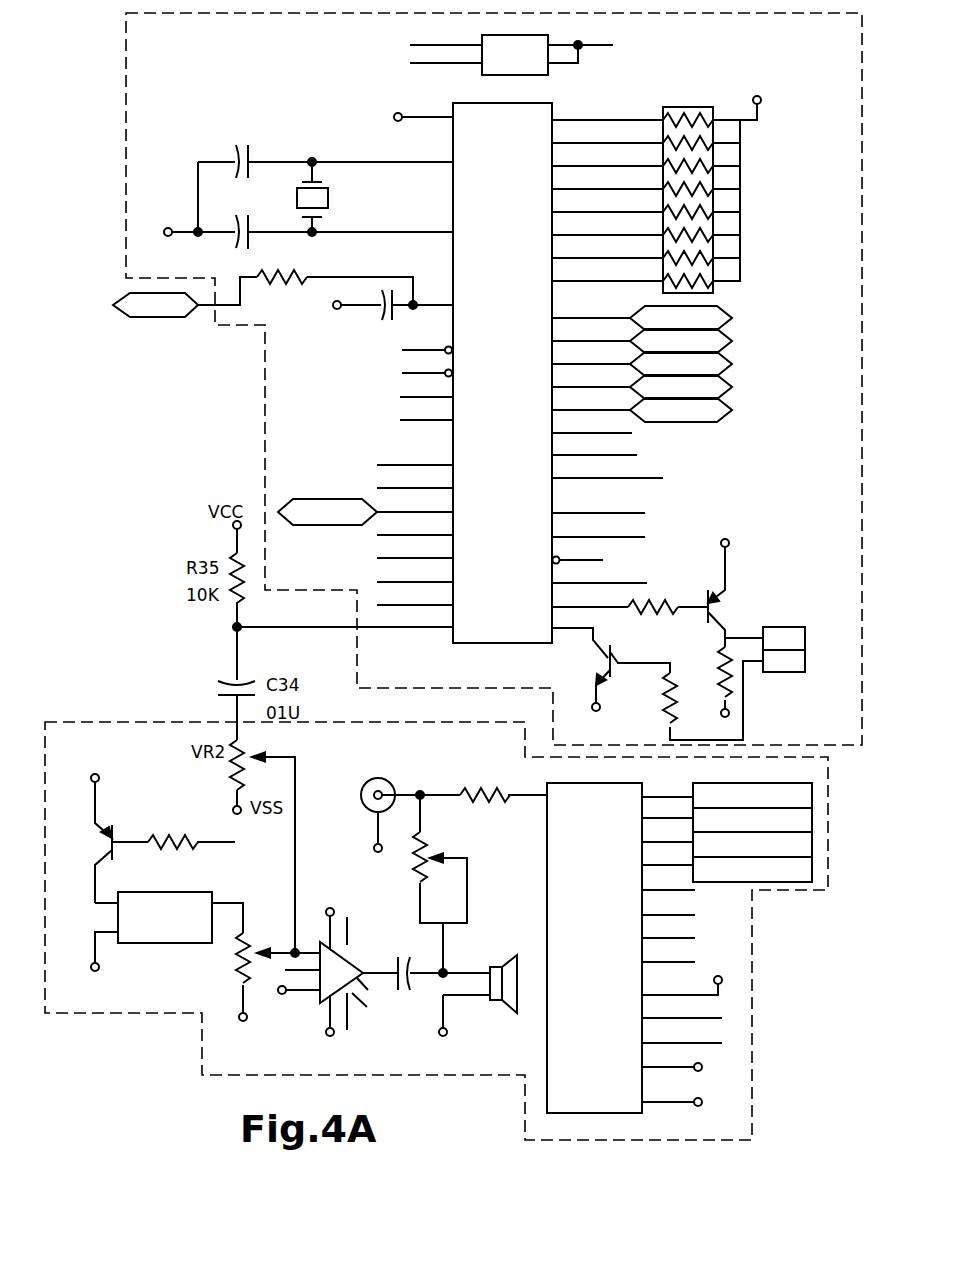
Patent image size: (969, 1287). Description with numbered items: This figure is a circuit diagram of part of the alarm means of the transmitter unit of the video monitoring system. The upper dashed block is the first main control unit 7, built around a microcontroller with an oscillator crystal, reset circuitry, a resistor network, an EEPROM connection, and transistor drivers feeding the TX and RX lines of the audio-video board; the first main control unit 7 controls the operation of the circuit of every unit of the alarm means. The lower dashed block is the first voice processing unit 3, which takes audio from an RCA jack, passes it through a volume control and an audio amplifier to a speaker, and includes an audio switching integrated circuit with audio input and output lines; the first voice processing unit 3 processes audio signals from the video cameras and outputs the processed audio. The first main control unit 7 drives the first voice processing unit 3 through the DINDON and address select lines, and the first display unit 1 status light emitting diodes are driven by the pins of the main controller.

The first main control unit 7 is at (263, 398).
The first voice processing unit 3 is at (140, 717).
The first display unit 1 is at (717, 184).